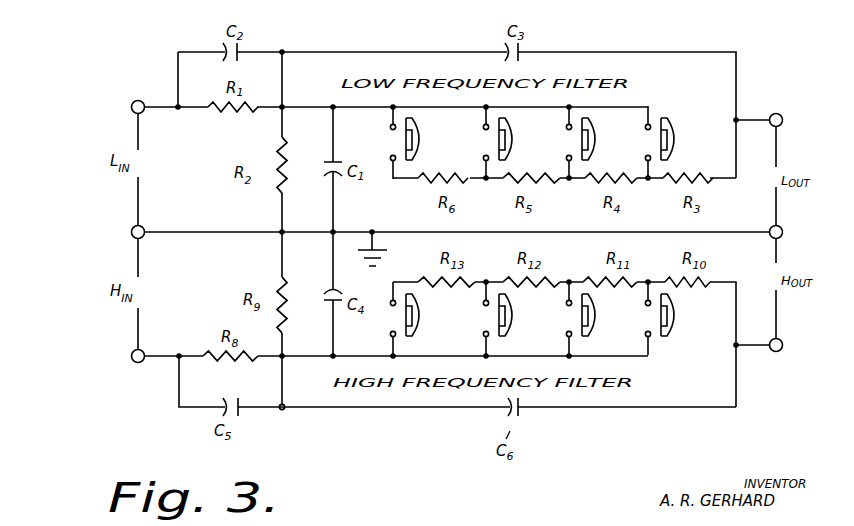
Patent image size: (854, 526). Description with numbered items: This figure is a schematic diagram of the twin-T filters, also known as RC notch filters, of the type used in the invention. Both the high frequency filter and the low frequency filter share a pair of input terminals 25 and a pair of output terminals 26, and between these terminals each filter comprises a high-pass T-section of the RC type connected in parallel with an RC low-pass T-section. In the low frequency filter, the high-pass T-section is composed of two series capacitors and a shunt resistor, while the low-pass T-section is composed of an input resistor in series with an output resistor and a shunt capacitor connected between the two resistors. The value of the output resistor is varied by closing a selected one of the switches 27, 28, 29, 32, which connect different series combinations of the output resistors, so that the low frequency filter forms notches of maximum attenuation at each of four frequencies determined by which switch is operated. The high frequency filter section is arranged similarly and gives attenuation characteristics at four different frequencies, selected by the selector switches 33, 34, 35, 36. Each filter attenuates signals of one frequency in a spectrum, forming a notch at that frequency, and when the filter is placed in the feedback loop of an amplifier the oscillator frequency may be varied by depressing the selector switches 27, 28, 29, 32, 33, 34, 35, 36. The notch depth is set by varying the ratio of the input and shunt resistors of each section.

The input terminals 25 is at (133, 350).
The output terminals 26 is at (796, 345).
The switch 27 is at (423, 134).
The switch 28 is at (516, 134).
The switch 29 is at (609, 128).
The switch 32 is at (681, 140).
The selector switch 33 is at (423, 313).
The selector switch 34 is at (516, 317).
The selector switch 35 is at (600, 317).
The selector switch 36 is at (679, 318).